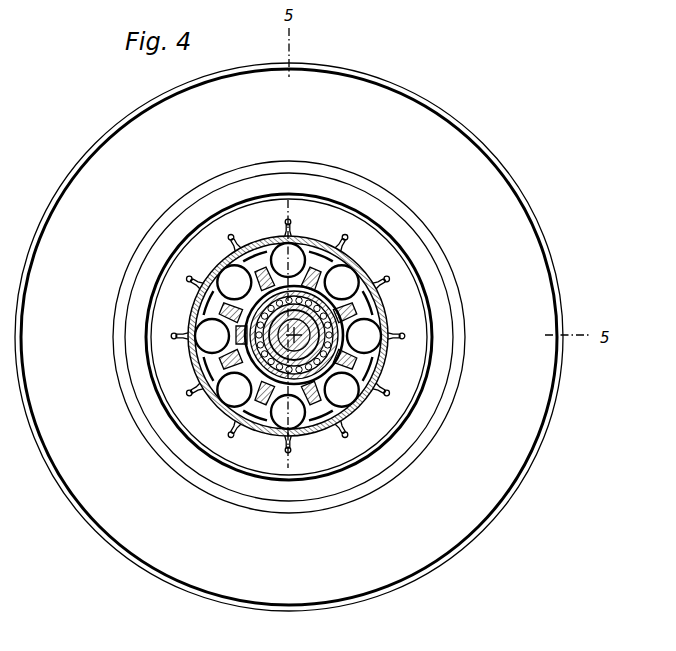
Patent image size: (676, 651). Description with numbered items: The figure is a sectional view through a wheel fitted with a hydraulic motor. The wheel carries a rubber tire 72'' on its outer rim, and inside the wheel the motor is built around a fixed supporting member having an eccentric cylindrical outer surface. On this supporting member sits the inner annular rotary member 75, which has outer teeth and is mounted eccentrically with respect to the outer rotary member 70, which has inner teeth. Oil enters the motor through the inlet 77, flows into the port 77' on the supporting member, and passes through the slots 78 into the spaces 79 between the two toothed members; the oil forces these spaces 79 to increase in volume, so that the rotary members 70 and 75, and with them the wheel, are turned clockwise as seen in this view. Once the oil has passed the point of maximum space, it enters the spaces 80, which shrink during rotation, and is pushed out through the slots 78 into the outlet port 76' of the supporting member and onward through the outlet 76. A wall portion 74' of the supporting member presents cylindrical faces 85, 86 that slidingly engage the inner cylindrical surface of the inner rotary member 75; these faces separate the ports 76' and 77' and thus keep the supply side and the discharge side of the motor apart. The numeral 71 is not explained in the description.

The outer rotary member 70 is at (327, 268).
The key 71 is at (240, 323).
The rubber tire 72'' is at (295, 337).
The wall portion 74' is at (332, 330).
The inner annular rotary member 75 is at (343, 300).
The outlet 76 is at (203, 372).
The outlet port 76' is at (350, 274).
The inlet 77 is at (313, 444).
The port 77' is at (371, 366).
The slots 78 is at (253, 387).
The spaces 79 is at (272, 403).
The spaces 80 is at (271, 239).
The cylindrical face 85 is at (185, 335).
The cylindrical face 86 is at (232, 387).